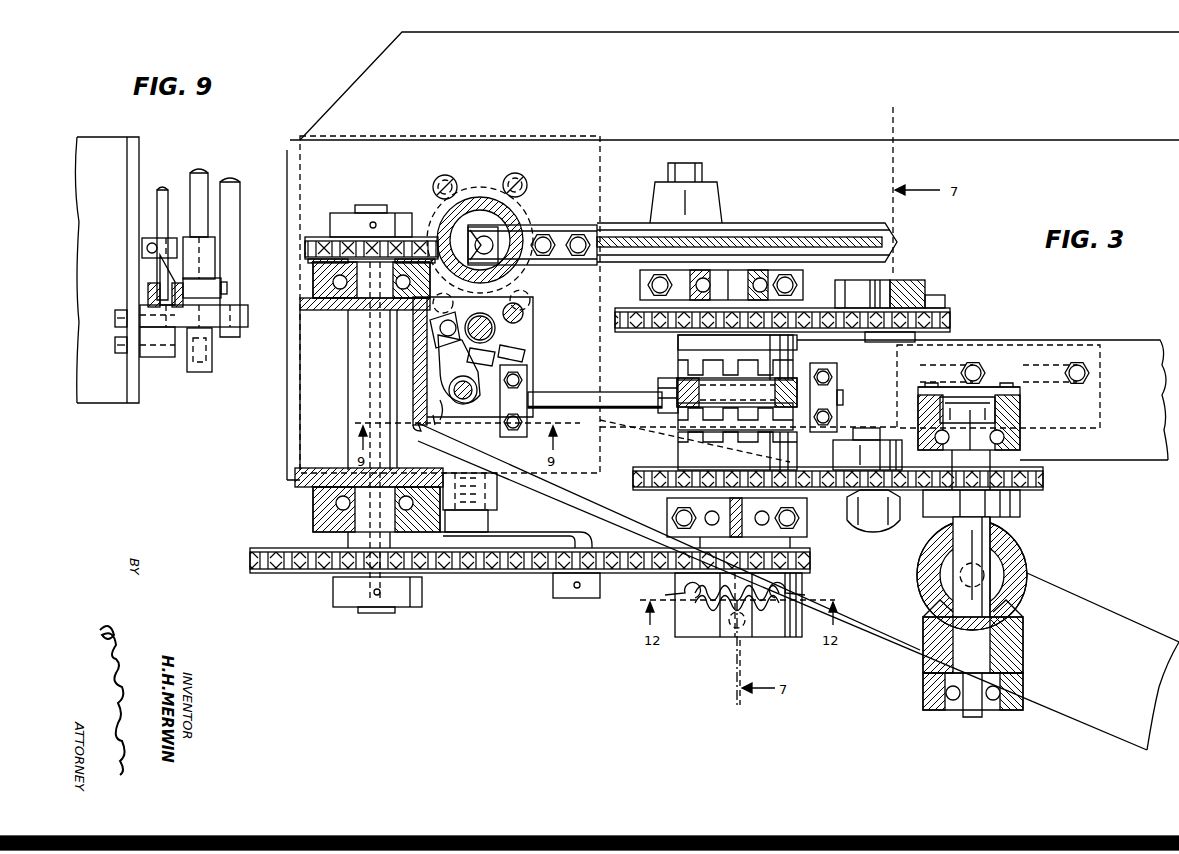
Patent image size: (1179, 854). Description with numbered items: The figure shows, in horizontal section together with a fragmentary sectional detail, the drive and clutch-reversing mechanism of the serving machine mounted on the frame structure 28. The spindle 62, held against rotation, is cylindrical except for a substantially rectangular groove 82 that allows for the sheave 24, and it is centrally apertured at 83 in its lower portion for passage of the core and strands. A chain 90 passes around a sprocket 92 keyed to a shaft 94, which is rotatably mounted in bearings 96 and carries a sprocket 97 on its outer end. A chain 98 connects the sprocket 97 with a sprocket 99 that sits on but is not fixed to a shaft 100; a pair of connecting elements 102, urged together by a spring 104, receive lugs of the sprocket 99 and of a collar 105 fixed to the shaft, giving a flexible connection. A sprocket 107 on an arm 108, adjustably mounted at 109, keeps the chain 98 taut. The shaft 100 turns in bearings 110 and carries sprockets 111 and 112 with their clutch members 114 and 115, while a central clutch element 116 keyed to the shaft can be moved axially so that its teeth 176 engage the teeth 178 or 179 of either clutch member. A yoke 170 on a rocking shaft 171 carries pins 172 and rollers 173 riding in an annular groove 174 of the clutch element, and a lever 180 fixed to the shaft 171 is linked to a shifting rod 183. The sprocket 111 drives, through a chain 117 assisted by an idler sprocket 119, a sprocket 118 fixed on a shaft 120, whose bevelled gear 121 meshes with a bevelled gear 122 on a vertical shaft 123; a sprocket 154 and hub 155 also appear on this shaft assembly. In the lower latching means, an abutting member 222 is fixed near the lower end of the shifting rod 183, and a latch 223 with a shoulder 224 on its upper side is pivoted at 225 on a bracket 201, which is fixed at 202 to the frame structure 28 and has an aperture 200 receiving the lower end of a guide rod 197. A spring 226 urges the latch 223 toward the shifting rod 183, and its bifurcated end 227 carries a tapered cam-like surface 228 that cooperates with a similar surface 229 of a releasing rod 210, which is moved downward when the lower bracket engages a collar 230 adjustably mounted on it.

In FIG. 9, the frame structure 28 is at (108, 150).
In FIG. 3, the frame structure 28 is at (345, 97).
In FIG. 9, the releasing rod 210 is at (158, 205).
In FIG. 3, the releasing rod 210 is at (448, 330).
In FIG. 9, the collar 230 is at (170, 238).
In FIG. 9, the shifting rod 183 is at (206, 173).
In FIG. 3, the shifting rod 183 is at (488, 331).
In FIG. 9, the guide rod 197 is at (238, 230).
In FIG. 3, the guide rod 197 is at (525, 315).
In FIG. 9, the abutting member 222 is at (215, 284).
In FIG. 3, the abutting member 222 is at (525, 330).
In FIG. 9, the shoulder 224 is at (172, 282).
In FIG. 3, the shoulder 224 is at (456, 320).
In FIG. 9, the tapered cam-like surface 229 is at (172, 285).
In FIG. 9, the tapered cam-like surface 228 is at (150, 292).
In FIG. 9, the aperture 200 is at (240, 316).
In FIG. 9, the bracket 201 is at (155, 357).
In FIG. 3, the bracket 201 is at (520, 345).
In FIG. 9, the bifurcated end 227 is at (200, 373).
In FIG. 9, the mounting 202 is at (112, 322).
In FIG. 3, the spindle 62 is at (482, 212).
In FIG. 3, the groove 82 is at (468, 235).
In FIG. 3, the aperture 83 is at (470, 240).
In FIG. 3, the sheave 24 is at (626, 222).
In FIG. 3, the chain 90 is at (323, 237).
In FIG. 3, the sprocket 92 is at (338, 237).
In FIG. 3, the bearings 96 is at (332, 298).
In FIG. 3, the shaft 94 is at (348, 380).
In FIG. 3, the spring 226 is at (428, 370).
In FIG. 3, the latch 223 is at (445, 372).
In FIG. 3, the pivot 225 is at (438, 412).
In FIG. 3, the lever 180 is at (494, 415).
In FIG. 3, the sprocket 97 is at (312, 575).
In FIG. 3, the chain 98 is at (463, 575).
In FIG. 3, the adjustable mounting 109 is at (487, 504).
In FIG. 3, the sprocket 107 is at (615, 575).
In FIG. 3, the arm 108 is at (564, 598).
In FIG. 3, the bearings 110 is at (775, 292).
In FIG. 3, the sprocket 112 is at (632, 308).
In FIG. 3, the hub 155 is at (920, 280).
In FIG. 3, the sprocket 154 is at (940, 308).
In FIG. 3, the teeth 179 is at (735, 357).
In FIG. 3, the pins 172 is at (677, 382).
In FIG. 3, the teeth 176 is at (735, 408).
In FIG. 3, the teeth 178 is at (737, 451).
In FIG. 3, the shaft 171 is at (620, 400).
In FIG. 3, the yoke 170 is at (660, 406).
In FIG. 3, the annular groove 174 is at (685, 418).
In FIG. 3, the rollers 173 is at (683, 375).
In FIG. 3, the clutch member 115 is at (678, 350).
In FIG. 3, the clutch member 114 is at (678, 455).
In FIG. 3, the clutch element 116 is at (800, 372).
In FIG. 3, the idler sprocket 119 is at (833, 455).
In FIG. 3, the sprocket 111 is at (660, 470).
In FIG. 3, the chain 117 is at (668, 475).
In FIG. 3, the sprocket 118 is at (1035, 481).
In FIG. 3, the sprocket 99 is at (805, 560).
In FIG. 3, the shaft 100 is at (730, 640).
In FIG. 3, the spring 104 is at (715, 604).
In FIG. 3, the connecting elements 102 is at (685, 592).
In FIG. 3, the collar 105 is at (790, 637).
In FIG. 3, the vertical shaft 123 is at (935, 577).
In FIG. 3, the shaft 120 is at (990, 520).
In FIG. 3, the bevelled gear 122 is at (1025, 567).
In FIG. 3, the bevelled gear 121 is at (1023, 643).